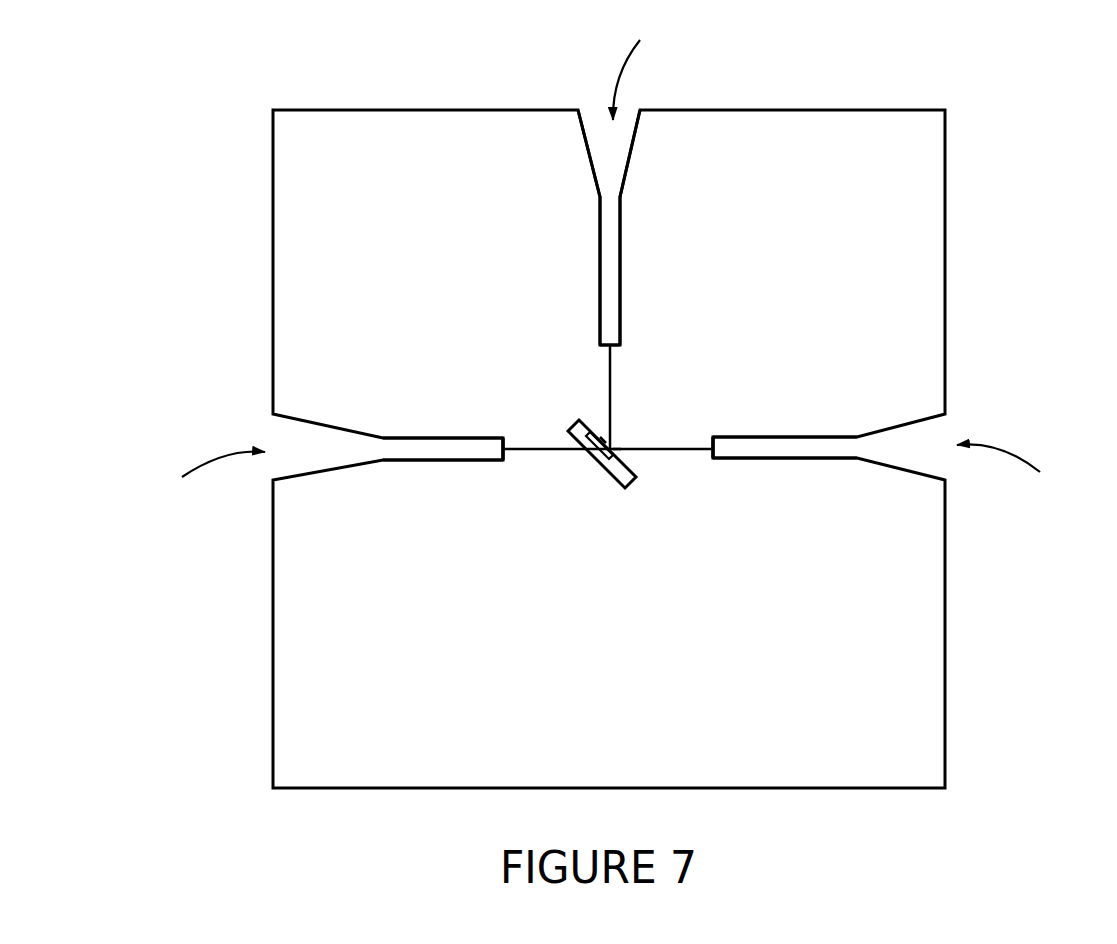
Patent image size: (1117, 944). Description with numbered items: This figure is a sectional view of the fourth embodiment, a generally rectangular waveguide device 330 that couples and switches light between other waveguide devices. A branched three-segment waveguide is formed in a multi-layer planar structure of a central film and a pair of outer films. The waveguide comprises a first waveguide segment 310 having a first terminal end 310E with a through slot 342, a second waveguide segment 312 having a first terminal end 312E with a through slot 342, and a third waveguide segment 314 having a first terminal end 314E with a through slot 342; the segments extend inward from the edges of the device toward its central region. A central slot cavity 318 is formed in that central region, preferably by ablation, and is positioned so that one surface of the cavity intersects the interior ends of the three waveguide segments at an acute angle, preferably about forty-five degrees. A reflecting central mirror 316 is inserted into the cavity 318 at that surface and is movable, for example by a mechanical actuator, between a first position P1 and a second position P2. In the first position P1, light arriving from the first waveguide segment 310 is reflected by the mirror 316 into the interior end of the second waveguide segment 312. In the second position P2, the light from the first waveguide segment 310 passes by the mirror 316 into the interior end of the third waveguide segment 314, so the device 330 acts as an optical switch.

The waveguide device 330 is at (926, 92).
The through slot 342 is at (609, 270).
The second waveguide segment 312 is at (608, 367).
The first terminal end of second waveguide segment 312E is at (613, 350).
The first waveguide segment 310 is at (684, 445).
The first terminal end of first waveguide segment 310E is at (712, 459).
The third waveguide segment 314 is at (525, 445).
The first terminal end of third waveguide segment 314E is at (505, 460).
The reflecting central mirror 316 is at (602, 462).
The central slot cavity 318 is at (610, 482).
The first position P1 is at (617, 452).
The second position P2 is at (602, 440).